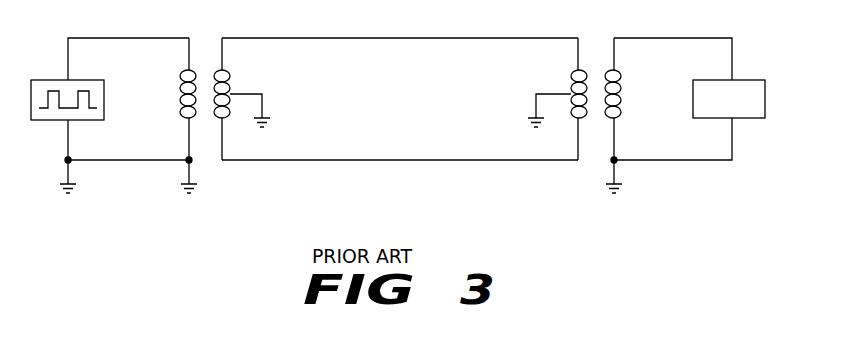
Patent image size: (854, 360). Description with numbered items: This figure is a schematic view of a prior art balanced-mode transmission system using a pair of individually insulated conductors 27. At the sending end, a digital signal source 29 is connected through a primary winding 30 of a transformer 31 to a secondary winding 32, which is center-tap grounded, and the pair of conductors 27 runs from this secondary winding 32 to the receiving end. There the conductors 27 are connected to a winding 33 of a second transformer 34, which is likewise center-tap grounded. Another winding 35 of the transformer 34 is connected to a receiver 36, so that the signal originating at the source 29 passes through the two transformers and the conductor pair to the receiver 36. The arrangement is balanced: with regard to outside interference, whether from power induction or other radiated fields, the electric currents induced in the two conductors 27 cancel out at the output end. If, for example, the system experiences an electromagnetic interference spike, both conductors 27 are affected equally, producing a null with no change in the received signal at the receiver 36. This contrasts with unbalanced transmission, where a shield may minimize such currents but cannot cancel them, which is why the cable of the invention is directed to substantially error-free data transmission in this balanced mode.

The insulated conductors 27 is at (373, 38).
The digital signal source 29 is at (104, 100).
The primary winding 30 is at (182, 125).
The transformer 31 is at (210, 80).
The secondary winding 32 is at (228, 80).
The winding 33 is at (578, 80).
The transformer 34 is at (592, 80).
The winding 35 is at (618, 124).
The receiver 36 is at (693, 92).